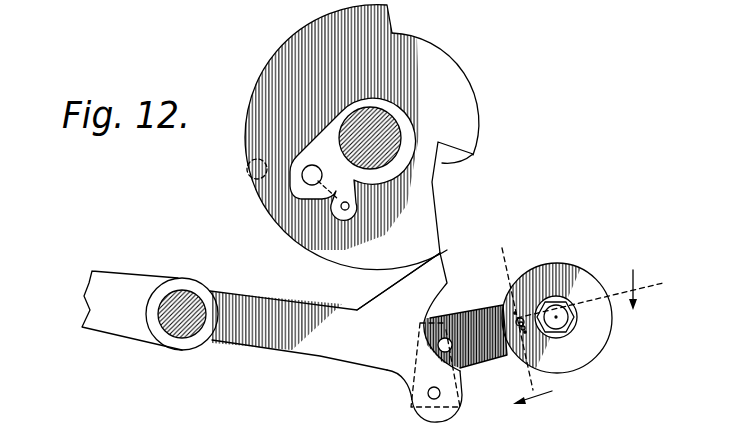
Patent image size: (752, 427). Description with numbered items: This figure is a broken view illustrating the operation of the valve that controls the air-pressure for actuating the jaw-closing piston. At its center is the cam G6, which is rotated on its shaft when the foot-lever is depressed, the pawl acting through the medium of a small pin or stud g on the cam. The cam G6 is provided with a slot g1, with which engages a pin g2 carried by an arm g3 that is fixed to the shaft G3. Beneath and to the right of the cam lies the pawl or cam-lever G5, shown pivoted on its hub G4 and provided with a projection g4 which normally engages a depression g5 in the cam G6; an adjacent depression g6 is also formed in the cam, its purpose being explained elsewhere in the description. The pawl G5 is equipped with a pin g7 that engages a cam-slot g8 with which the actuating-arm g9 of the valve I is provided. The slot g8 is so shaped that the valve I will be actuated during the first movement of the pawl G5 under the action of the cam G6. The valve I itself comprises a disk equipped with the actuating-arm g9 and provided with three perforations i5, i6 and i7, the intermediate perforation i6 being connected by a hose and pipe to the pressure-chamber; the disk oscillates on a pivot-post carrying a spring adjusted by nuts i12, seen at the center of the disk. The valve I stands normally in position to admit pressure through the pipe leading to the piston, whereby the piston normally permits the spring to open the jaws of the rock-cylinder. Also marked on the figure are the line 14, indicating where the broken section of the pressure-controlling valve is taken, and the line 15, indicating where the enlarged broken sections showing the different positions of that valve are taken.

The cam G6 is at (357, 135).
The adjacent depression g6 is at (438, 53).
The shaft G3 is at (388, 126).
The depression g5 is at (448, 166).
The small pin or stud g is at (246, 167).
The arm g3 is at (302, 176).
The pin g2 is at (291, 188).
The slot g1 is at (333, 211).
The pivot hub of lever G4 is at (180, 292).
The pawl or cam-lever G5 is at (301, 282).
The projection g4 is at (398, 281).
The cam-slot g8 is at (462, 314).
The pin g7 is at (428, 393).
The actuating-arm g9 is at (492, 356).
The perforation i5 is at (520, 320).
The valve I is at (587, 303).
The section line 14 is at (604, 287).
The nuts i12 is at (560, 317).
The intermediate perforation i6 is at (522, 325).
The perforation i7 is at (570, 356).
The section line 15 is at (539, 407).